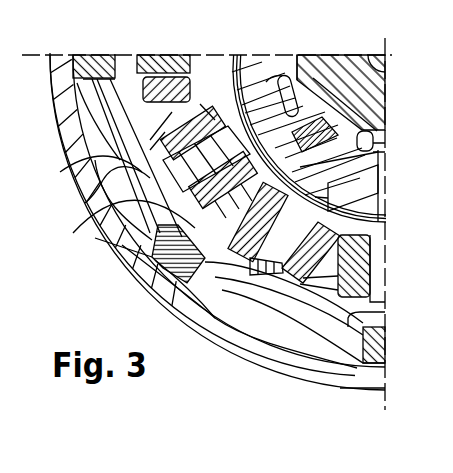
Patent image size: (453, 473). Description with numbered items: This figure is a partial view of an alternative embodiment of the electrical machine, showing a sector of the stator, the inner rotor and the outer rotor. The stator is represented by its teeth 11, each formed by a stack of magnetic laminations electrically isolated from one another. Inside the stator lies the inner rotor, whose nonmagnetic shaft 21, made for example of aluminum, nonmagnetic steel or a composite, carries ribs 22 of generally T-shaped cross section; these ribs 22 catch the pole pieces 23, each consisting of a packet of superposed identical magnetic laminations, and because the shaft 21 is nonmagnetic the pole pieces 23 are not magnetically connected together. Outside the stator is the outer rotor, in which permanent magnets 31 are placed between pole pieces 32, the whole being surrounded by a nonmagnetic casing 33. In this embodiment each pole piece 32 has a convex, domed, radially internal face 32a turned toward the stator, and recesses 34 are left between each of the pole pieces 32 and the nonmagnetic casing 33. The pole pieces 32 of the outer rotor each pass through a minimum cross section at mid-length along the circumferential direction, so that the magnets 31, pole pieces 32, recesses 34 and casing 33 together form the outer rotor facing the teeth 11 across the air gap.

The teeth 11 is at (158, 58).
The shaft 21 is at (372, 85).
The ribs 22 is at (303, 97).
The pole pieces 23 is at (363, 170).
The permanent magnets 31 is at (72, 68).
The pole pieces 32 is at (85, 203).
The radially internal face 32a is at (353, 310).
The nonmagnetic casing 33 is at (353, 373).
The recesses 34 is at (107, 153).